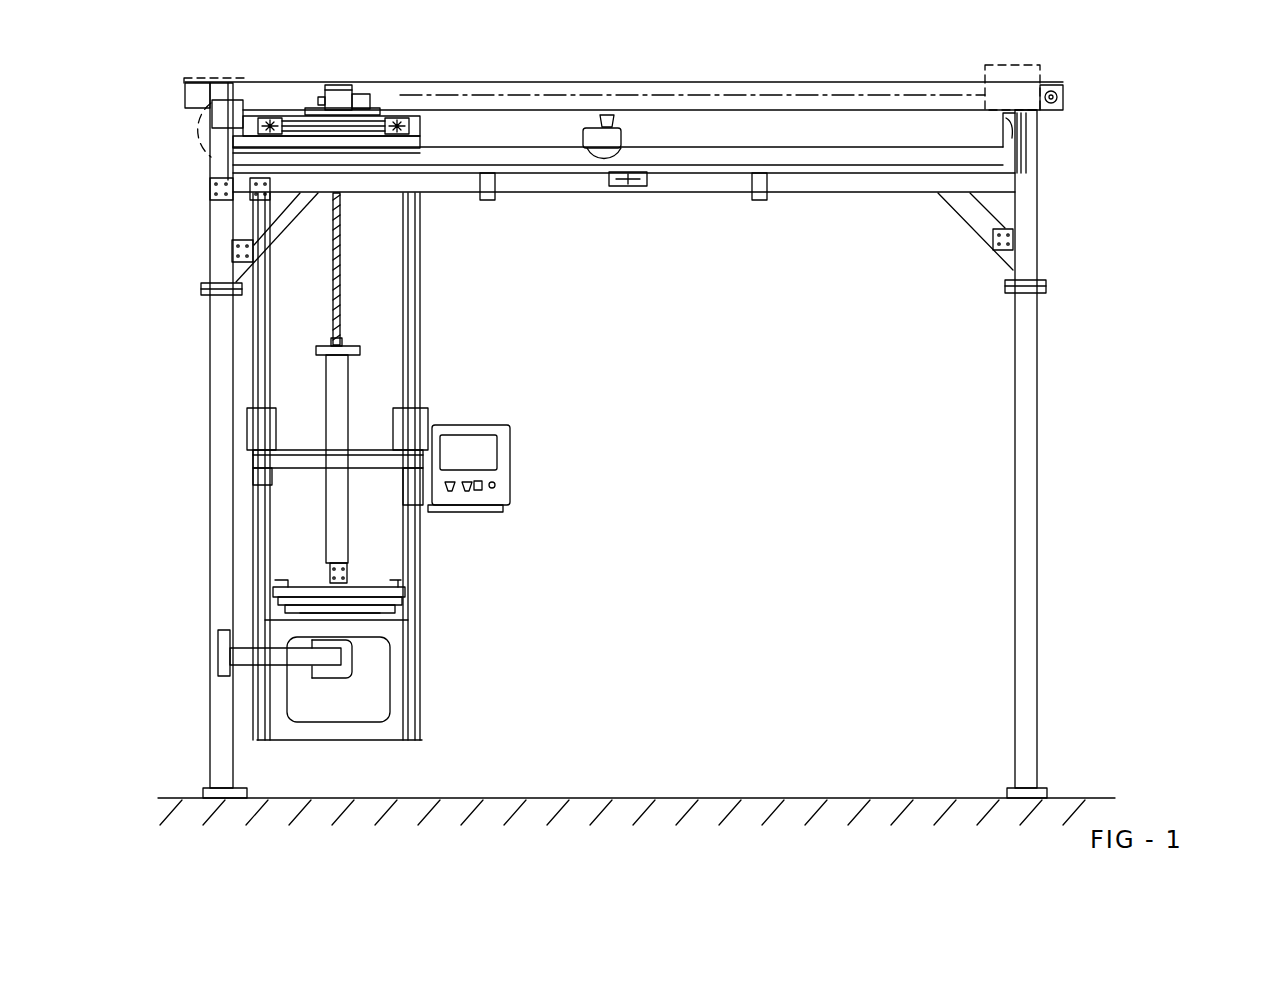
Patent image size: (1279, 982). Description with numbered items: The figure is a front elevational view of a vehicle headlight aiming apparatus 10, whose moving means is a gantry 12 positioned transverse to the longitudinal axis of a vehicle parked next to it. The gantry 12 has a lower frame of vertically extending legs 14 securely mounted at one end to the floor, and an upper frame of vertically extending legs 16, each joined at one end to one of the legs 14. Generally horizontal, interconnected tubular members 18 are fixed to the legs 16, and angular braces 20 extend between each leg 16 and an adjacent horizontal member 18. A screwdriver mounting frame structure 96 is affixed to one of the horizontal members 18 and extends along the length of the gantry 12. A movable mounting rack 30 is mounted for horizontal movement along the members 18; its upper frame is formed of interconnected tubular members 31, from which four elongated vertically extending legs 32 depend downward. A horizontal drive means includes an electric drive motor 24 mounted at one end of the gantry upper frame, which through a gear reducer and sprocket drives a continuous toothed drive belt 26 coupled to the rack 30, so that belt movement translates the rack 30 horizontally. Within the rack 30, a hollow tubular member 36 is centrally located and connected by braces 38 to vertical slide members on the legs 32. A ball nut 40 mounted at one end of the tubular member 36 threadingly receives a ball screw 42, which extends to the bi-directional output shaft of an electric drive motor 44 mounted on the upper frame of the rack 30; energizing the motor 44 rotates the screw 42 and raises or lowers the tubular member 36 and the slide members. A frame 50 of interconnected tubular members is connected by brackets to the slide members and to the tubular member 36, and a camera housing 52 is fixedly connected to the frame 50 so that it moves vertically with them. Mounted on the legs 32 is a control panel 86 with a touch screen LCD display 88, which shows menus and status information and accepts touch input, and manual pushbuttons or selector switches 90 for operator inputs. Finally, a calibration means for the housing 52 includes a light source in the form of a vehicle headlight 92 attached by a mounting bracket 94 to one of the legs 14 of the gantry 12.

The vehicle headlight aiming apparatus 10 is at (1135, 318).
The gantry 12 is at (660, 70).
The vertically extending legs 14 is at (217, 578).
The vertically extending legs 16 is at (215, 230).
The horizontal tubular members 18 is at (545, 193).
The angular braces 20 is at (290, 226).
The electric drive motor 24 is at (1043, 62).
The toothed drive belt 26 is at (810, 72).
The movable mounting rack 30 is at (422, 276).
The tubular members 31 is at (420, 114).
The vertically extending legs 32 is at (260, 362).
The hollow tubular member 36 is at (397, 577).
The braces 38 is at (405, 425).
The ball nut 40 is at (350, 352).
The ball screw 42 is at (340, 270).
The electric drive motor 44 is at (333, 90).
The frame 50 is at (392, 601).
The housing 52 is at (385, 735).
The control panel 86 is at (505, 485).
The touch screen LCD display 88 is at (488, 432).
The manual pushbuttons or selector switches 90 is at (450, 491).
The vehicle headlight 92 is at (348, 675).
The mounting bracket 94 is at (245, 655).
The screwdriver mounting frame structure 96 is at (565, 72).